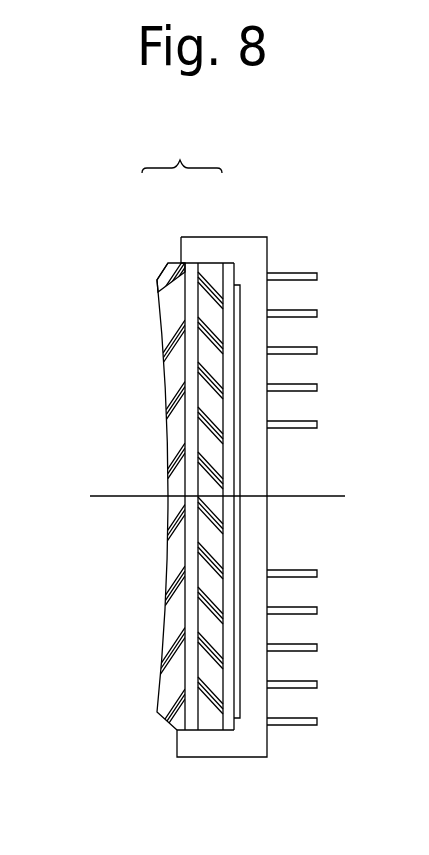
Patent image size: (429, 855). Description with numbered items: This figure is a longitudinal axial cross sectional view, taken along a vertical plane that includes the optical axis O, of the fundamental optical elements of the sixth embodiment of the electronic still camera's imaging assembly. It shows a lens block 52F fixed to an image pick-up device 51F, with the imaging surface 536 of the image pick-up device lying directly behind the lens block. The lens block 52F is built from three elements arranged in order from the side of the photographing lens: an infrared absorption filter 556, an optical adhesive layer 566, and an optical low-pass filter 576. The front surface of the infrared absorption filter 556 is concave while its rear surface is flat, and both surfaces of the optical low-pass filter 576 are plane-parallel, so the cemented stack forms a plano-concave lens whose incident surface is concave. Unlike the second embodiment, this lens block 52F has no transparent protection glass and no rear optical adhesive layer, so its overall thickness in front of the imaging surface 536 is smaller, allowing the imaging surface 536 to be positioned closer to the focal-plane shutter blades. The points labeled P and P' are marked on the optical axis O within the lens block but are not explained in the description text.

The image pick-up device 51F is at (253, 257).
The lens block 52F is at (161, 476).
The imaging surface 536 is at (234, 420).
The infrared absorption filter 556 is at (160, 272).
The optical adhesive layer 566 is at (188, 728).
The optical low-pass filter 576 is at (213, 268).
The optical axis O is at (231, 498).
The principal point P is at (295, 428).
The rear principal point P' is at (318, 467).